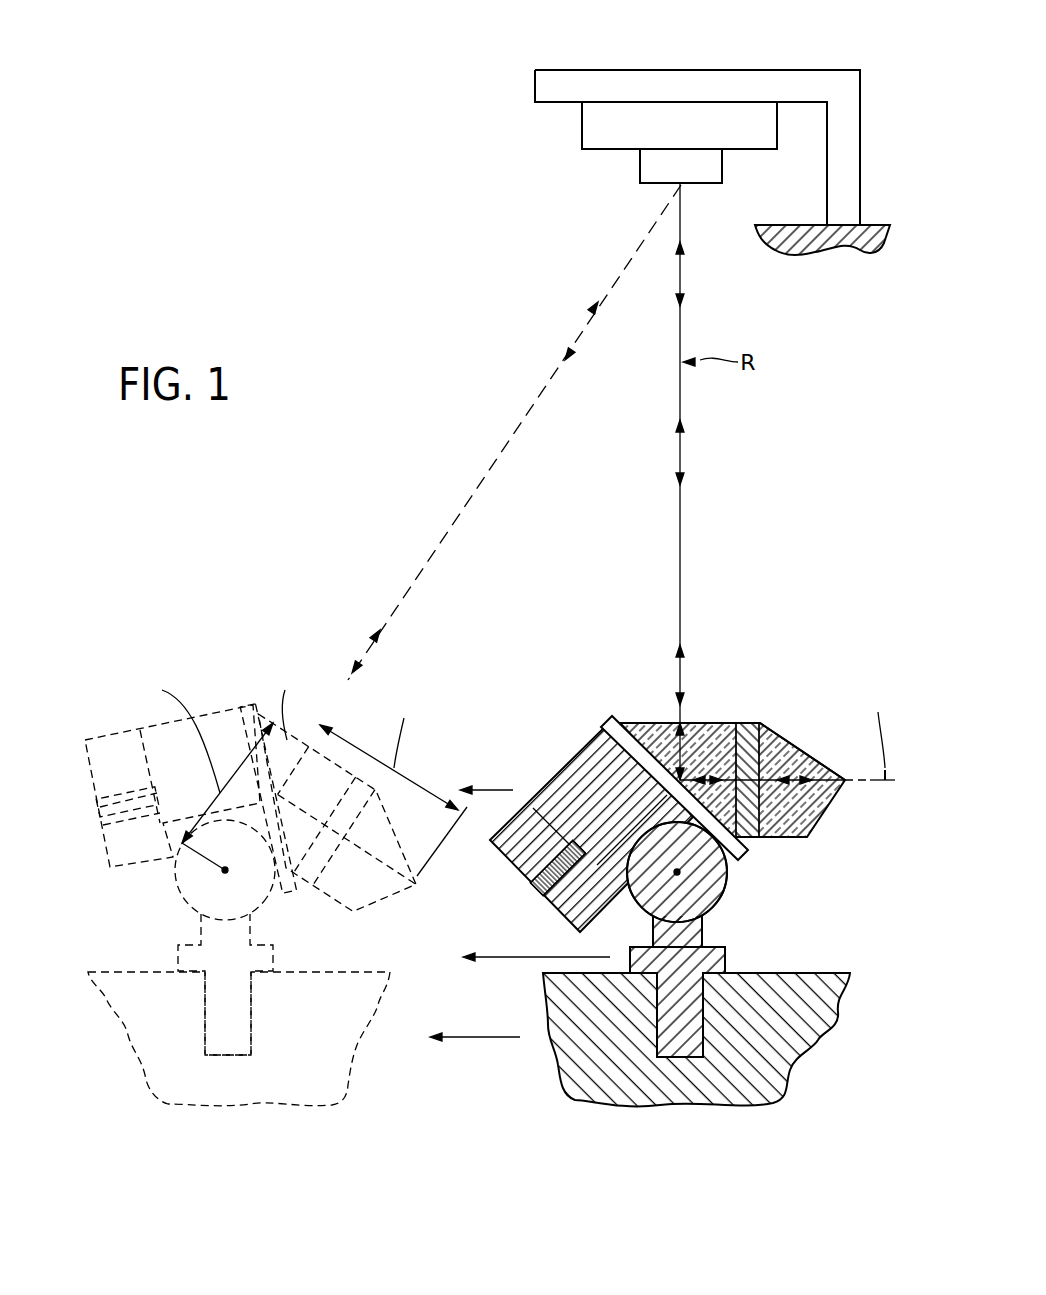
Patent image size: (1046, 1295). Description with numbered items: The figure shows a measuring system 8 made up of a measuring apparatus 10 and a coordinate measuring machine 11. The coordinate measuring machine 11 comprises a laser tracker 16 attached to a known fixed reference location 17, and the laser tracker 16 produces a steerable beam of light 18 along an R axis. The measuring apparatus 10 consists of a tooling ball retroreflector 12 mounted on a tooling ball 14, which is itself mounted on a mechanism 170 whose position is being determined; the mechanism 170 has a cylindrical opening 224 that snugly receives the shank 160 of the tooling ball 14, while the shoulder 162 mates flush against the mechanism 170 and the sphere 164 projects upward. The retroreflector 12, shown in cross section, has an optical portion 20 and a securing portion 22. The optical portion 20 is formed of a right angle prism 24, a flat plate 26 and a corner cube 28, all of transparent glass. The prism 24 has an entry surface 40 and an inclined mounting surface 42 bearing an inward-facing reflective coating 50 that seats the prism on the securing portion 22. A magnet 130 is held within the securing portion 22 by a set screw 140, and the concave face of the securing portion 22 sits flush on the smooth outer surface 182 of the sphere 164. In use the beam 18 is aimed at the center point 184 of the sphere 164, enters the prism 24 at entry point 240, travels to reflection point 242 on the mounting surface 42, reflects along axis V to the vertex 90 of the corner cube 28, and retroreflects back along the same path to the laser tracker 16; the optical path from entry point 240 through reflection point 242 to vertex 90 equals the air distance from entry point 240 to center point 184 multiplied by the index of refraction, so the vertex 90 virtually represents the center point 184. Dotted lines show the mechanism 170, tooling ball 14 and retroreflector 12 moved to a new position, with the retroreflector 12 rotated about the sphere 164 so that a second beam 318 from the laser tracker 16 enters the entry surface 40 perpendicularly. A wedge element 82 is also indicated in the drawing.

The measuring system 8 is at (388, 140).
The measuring apparatus 10 is at (199, 662).
The coordinate measuring machine 11 is at (662, 48).
The tooling ball retroreflector 12 is at (386, 800).
The tooling ball 14 is at (478, 984).
The laser tracker 16 is at (628, 167).
The fixed reference location 17 is at (808, 202).
The beam of light 18 is at (683, 495).
The optical portion 20 is at (563, 785).
The securing portion 22 is at (520, 862).
The right angle prism 24 is at (643, 722).
The flat plate 26 is at (760, 722).
The corner cube 28 is at (808, 840).
The entry surface 40 is at (718, 722).
The mounting surface 42 is at (508, 804).
The reflective coating 50 is at (617, 718).
The wedge element 82 is at (815, 742).
The vertex 90 is at (848, 784).
The magnet 130 is at (563, 772).
The set screw 140 is at (542, 888).
The shank 160 is at (707, 1035).
The shoulder 162 is at (740, 962).
The sphere 164 is at (633, 912).
The mechanism 170 is at (542, 1063).
The outer surface 182 is at (446, 884).
The center point 184 is at (724, 909).
The cylindrical opening 224 is at (666, 1035).
The entry point 240 is at (658, 722).
The reflection point 242 is at (700, 722).
The second beam 318 is at (495, 462).